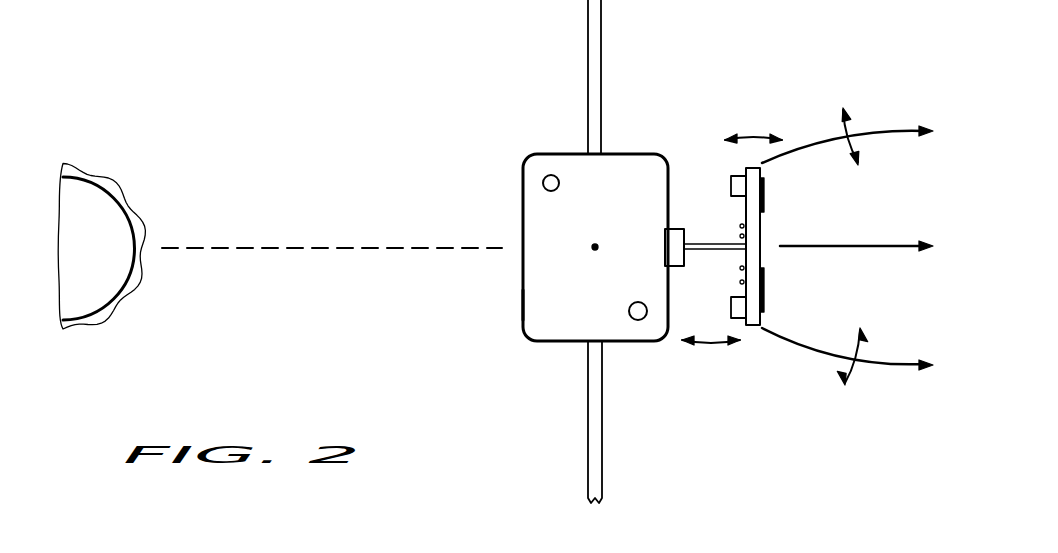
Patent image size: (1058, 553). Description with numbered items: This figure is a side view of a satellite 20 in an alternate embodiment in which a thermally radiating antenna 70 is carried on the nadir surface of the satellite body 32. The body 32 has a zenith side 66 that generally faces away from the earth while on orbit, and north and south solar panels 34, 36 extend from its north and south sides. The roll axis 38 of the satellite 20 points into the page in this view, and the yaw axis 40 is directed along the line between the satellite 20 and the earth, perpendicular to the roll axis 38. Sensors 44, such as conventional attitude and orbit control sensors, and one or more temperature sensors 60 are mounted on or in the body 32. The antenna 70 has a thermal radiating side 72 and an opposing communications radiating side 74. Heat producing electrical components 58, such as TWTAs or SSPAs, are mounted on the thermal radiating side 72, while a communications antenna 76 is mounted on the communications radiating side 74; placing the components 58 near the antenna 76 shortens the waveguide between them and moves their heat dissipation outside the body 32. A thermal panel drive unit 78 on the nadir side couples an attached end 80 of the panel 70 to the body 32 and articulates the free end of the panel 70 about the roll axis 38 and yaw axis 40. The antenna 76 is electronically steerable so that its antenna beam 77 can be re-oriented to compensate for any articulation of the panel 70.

The satellite 20 is at (498, 395).
The satellite body 32 is at (634, 153).
The north solar panel 34 is at (588, 55).
The south solar panel 36 is at (588, 443).
The roll axis 38 is at (593, 247).
The yaw axis 40 is at (856, 246).
The sensors 44 is at (559, 183).
The heat producing electrical components 58 is at (731, 185).
The temperature sensors 60 is at (629, 311).
The zenith side 66 is at (523, 312).
The thermally radiating antenna 70 is at (753, 326).
The thermal radiating side 72 is at (746, 222).
The communications radiating side 74 is at (762, 230).
The communications antenna 76 is at (762, 195).
The antenna beam 77 is at (897, 128).
The thermal panel drive unit 78 is at (665, 245).
The attached end 80 is at (702, 251).